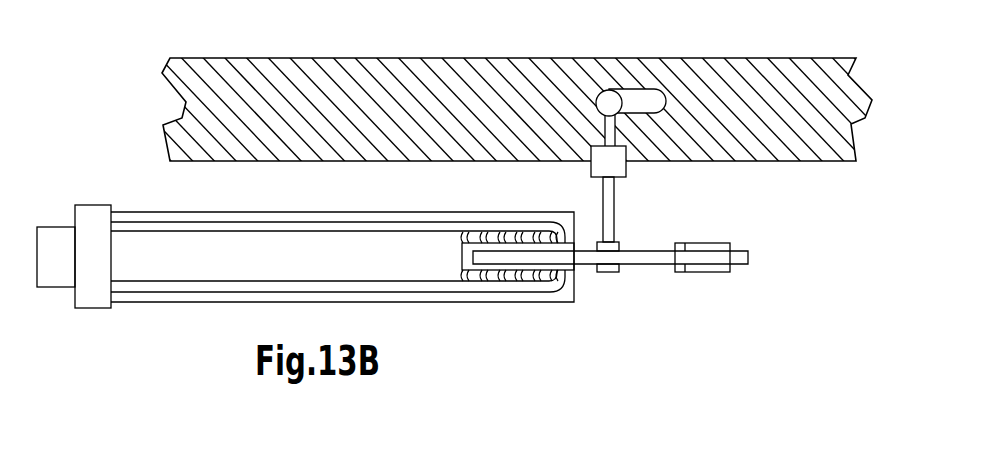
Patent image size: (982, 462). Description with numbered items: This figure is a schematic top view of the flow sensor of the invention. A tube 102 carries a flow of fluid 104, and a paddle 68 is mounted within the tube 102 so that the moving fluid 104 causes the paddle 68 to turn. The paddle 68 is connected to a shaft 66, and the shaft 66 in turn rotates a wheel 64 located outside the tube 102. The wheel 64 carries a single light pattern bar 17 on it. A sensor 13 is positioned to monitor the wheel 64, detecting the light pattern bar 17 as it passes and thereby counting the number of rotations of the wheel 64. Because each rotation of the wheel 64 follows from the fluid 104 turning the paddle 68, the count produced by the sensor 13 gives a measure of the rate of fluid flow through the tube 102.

The tube 102 is at (757, 58).
The fluid 104 is at (797, 128).
The paddle 68 is at (641, 98).
The shaft 66 is at (615, 218).
The wheel 64 is at (663, 255).
The light pattern bar 17 is at (700, 270).
The sensor 13 is at (535, 287).